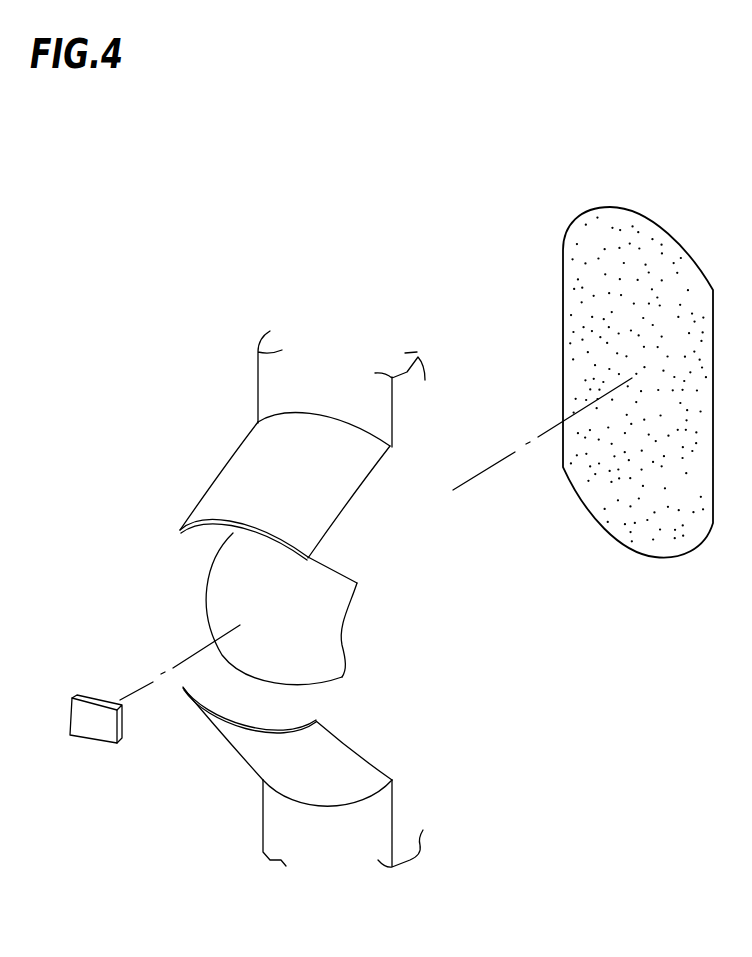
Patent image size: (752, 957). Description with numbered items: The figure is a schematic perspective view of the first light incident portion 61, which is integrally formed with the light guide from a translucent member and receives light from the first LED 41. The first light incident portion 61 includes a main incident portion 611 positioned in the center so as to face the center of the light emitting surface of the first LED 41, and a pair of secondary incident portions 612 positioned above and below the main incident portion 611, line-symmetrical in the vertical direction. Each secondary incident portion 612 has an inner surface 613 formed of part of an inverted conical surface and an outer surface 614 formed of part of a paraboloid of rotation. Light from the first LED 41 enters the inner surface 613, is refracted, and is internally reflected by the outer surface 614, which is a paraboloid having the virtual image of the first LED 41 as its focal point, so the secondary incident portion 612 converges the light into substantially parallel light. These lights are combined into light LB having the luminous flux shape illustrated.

The first light incident portion 61 is at (295, 588).
The main incident portion 611 is at (332, 638).
The secondary incident portion 612 is at (350, 535).
The inner surface 613 is at (230, 535).
The outer surface 614 is at (252, 452).
The first LED 41 is at (80, 700).
The light LB is at (563, 290).